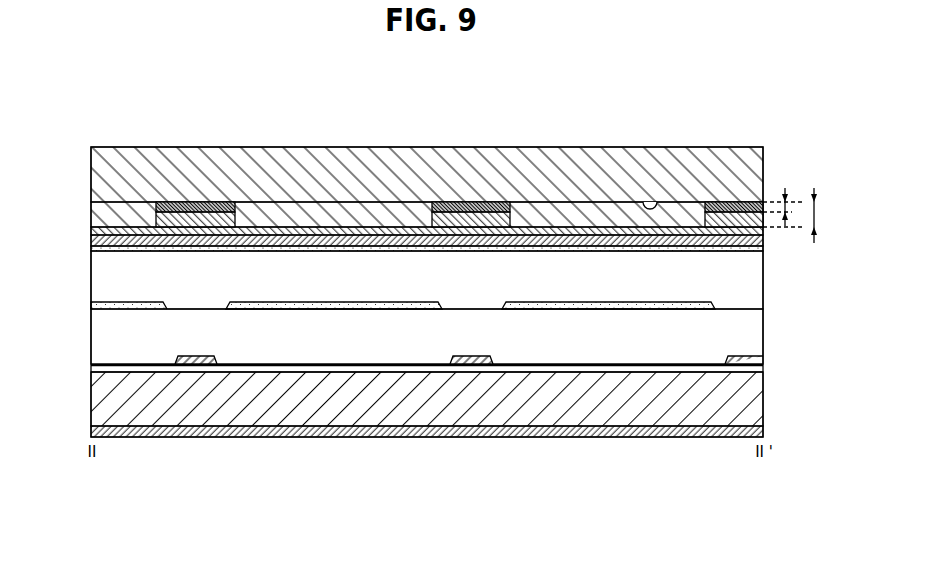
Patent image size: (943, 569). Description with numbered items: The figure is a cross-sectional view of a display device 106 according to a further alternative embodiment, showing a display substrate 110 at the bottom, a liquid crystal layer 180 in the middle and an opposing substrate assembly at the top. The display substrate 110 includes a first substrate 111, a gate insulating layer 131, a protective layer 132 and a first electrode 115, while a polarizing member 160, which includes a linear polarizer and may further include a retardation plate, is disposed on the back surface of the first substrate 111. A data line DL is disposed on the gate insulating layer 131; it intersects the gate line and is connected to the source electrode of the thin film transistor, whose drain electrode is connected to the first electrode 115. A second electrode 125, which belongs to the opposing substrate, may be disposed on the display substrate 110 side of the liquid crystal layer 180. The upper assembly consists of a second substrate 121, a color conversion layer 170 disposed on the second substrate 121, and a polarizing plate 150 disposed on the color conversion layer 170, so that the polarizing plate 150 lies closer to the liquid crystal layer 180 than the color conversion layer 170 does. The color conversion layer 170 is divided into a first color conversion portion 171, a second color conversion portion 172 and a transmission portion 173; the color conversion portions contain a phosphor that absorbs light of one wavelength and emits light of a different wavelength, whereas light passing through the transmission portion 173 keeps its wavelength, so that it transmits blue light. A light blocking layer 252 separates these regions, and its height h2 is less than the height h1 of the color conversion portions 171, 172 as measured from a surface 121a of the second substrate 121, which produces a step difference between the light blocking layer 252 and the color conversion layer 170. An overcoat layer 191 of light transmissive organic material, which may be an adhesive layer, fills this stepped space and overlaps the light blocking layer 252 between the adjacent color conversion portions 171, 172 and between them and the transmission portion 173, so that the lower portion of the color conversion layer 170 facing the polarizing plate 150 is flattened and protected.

The display device 106 is at (76, 98).
The second substrate 121 is at (393, 173).
The surface of second substrate 121a is at (655, 201).
The color conversion layer 170 is at (84, 210).
The first color conversion portion 171 is at (340, 205).
The second color conversion portion 172 is at (560, 207).
The transmission portion 173 is at (122, 212).
The light blocking layer 252 is at (194, 205).
The overcoat layer 191 is at (100, 232).
The polarizing plate 150 is at (100, 240).
The second electrode 125 is at (100, 248).
The liquid crystal layer 180 is at (100, 281).
The first electrode 115 is at (100, 305).
The protective layer 132 is at (100, 338).
The gate insulating layer 131 is at (100, 369).
The first substrate 111 is at (100, 400).
The polarizing member 160 is at (100, 431).
The display substrate 110 is at (767, 308).
The data line DL is at (195, 365).
The height of color conversion portions h1 is at (799, 215).
The height of light blocking layer h2 is at (786, 207).